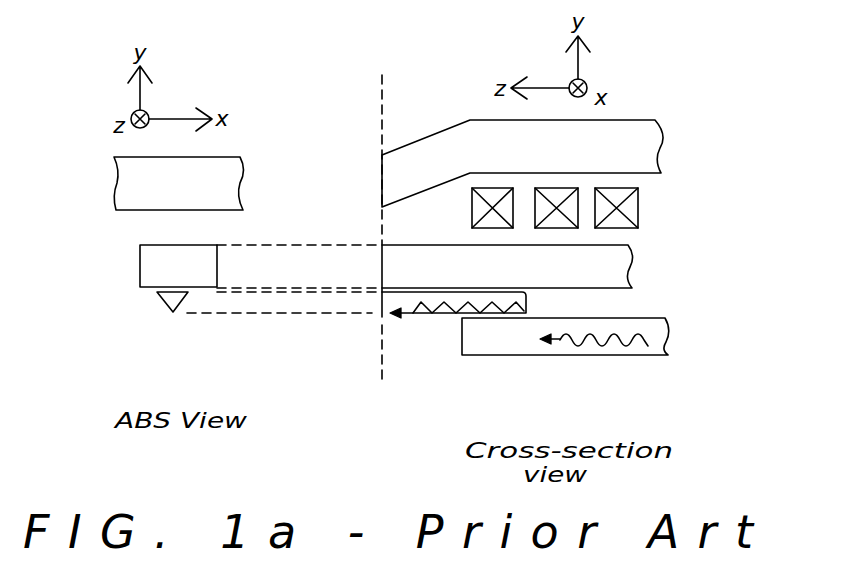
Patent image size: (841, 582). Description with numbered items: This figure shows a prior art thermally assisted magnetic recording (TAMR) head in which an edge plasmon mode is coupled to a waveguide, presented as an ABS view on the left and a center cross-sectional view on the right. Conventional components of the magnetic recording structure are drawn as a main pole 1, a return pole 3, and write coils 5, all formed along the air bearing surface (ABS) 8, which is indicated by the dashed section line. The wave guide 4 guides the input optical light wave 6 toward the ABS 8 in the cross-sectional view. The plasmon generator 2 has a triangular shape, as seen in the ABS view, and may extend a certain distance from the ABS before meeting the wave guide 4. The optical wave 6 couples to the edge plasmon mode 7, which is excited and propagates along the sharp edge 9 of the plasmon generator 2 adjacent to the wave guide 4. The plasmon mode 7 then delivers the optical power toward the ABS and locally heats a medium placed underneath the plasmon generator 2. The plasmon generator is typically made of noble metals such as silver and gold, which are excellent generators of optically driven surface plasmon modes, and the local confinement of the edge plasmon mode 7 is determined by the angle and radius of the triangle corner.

The main pole 1 is at (140, 272).
The plasmon generator 2 is at (173, 312).
The return pole 3 is at (113, 197).
The wave guide 4 is at (630, 356).
The write coils 5 is at (472, 220).
The input optical light wave 6 is at (565, 338).
The edge plasmon mode 7 is at (427, 318).
The air bearing surface 8 is at (381, 227).
The sharp edge 9 is at (526, 297).